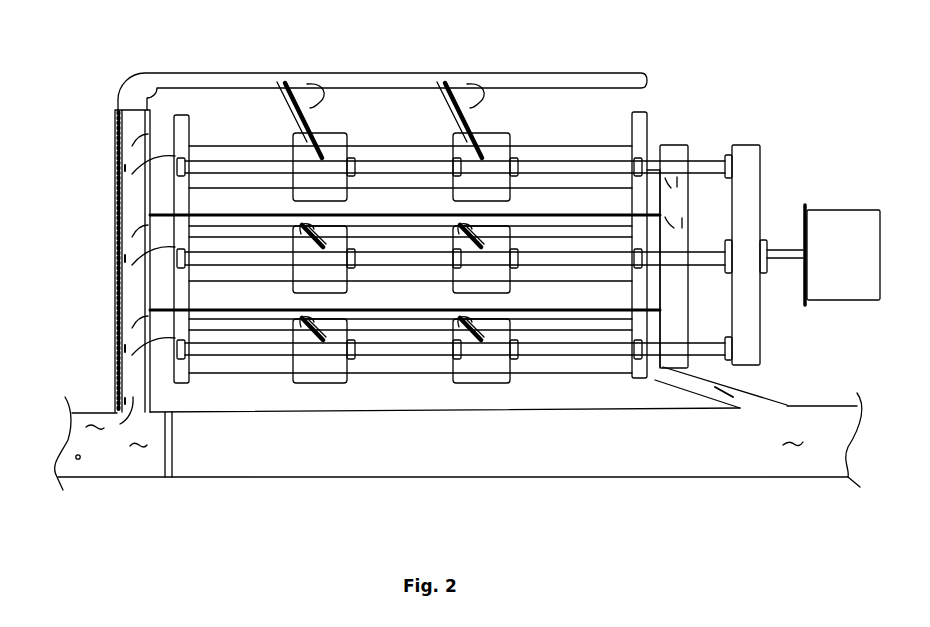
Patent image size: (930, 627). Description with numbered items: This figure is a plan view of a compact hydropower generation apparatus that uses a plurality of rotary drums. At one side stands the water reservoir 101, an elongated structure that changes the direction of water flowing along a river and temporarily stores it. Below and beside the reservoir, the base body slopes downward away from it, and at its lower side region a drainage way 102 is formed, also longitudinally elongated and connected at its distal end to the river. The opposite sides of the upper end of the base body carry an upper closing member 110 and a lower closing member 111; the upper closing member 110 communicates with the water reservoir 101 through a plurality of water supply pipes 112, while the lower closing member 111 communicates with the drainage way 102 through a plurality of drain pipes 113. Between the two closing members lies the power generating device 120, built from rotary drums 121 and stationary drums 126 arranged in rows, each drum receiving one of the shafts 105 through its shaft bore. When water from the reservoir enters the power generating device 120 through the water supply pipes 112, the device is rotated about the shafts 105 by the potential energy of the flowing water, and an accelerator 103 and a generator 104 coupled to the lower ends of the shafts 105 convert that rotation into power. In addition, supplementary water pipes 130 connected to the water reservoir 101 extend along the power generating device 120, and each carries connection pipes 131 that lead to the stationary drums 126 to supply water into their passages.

The water reservoir 101 is at (127, 297).
The drainage way 102 is at (675, 145).
The accelerator 103 is at (750, 155).
The generator 104 is at (848, 214).
The shafts 105 is at (372, 160).
The upper closing member 110 is at (183, 128).
The lower closing member 111 is at (637, 132).
The water supply pipes 112 is at (147, 243).
The drain pipes 113 is at (655, 380).
The power generating device 120 is at (425, 386).
The rotary drums 121 is at (415, 146).
The stationary drums 126 is at (290, 143).
The supplementary water pipes 130 is at (175, 80).
The connection pipes 131 is at (473, 110).